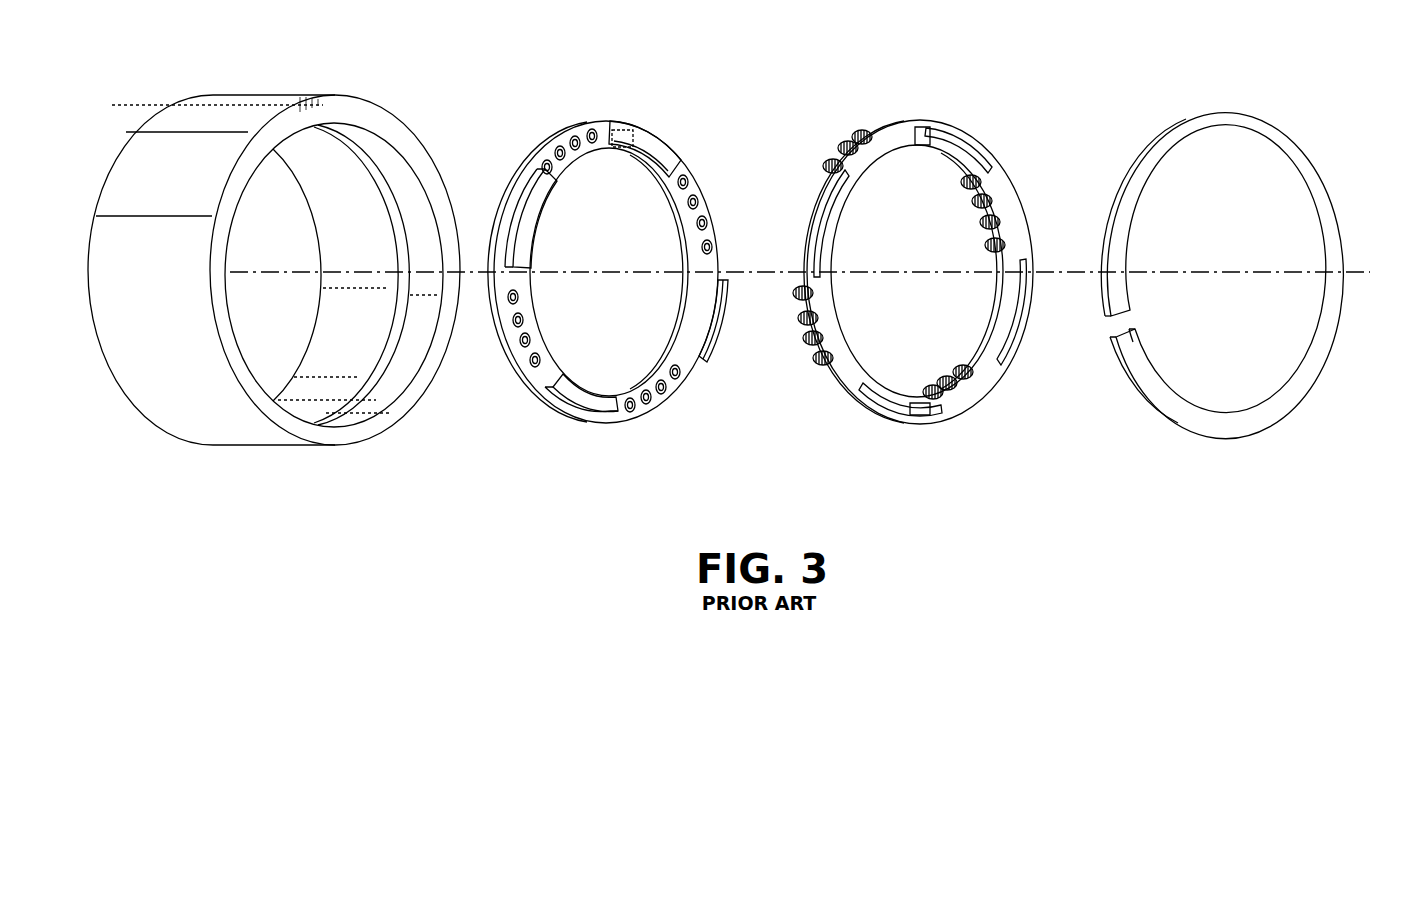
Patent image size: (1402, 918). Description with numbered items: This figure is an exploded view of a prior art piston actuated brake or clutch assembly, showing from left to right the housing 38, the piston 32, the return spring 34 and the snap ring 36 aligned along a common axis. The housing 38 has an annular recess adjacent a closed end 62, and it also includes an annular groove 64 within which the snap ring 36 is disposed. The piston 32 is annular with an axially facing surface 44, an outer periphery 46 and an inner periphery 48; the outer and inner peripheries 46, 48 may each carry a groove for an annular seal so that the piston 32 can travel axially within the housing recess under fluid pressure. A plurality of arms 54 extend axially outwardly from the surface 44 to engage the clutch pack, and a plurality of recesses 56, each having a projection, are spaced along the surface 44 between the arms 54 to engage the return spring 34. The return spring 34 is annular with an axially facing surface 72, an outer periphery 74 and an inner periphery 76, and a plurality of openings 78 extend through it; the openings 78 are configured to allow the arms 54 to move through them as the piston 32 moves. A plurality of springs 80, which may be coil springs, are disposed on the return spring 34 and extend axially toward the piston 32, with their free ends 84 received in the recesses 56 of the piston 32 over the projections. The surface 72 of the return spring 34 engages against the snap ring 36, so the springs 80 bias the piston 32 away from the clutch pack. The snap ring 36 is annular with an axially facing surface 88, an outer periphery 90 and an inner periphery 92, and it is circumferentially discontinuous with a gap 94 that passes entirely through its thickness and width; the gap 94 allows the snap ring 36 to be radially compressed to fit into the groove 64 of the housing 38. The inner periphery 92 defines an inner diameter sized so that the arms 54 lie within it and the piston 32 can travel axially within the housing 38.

The piston 32 is at (628, 250).
The return spring 34 is at (928, 276).
The snap ring 36 is at (1214, 283).
The housing 38 is at (289, 301).
The axially facing surface 44 is at (607, 120).
The outer periphery 46 is at (548, 125).
The inner periphery 48 is at (682, 312).
The arms 54 is at (663, 150).
The recesses 56 is at (703, 222).
The closed end 62 is at (275, 225).
The annular groove 64 is at (353, 158).
The axially facing surface 72 is at (1000, 185).
The outer periphery 74 is at (890, 125).
The inner periphery 76 is at (988, 340).
The openings 78 is at (924, 130).
The springs 80 is at (990, 243).
The free ends 84 is at (808, 341).
The axially facing surface 88 is at (1265, 130).
The outer periphery 90 is at (1140, 150).
The inner periphery 92 is at (1300, 335).
The gap 94 is at (1118, 320).